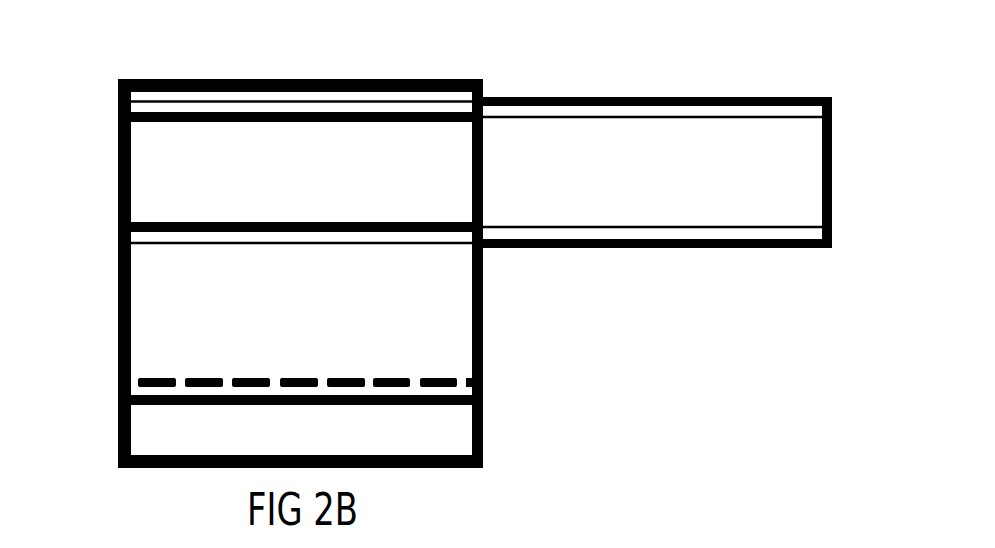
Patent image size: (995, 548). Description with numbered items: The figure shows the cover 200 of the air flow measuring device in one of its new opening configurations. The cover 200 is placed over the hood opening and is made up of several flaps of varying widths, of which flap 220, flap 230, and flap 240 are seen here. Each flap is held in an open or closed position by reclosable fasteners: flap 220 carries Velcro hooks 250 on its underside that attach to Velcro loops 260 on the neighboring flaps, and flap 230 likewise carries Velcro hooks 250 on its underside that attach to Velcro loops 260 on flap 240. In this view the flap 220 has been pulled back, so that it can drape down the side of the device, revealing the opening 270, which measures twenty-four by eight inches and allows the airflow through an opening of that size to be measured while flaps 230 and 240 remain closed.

The cover 200 is at (427, 55).
The flap 220 is at (815, 85).
The flap 230 is at (103, 330).
The flap 240 is at (103, 437).
The Velcro hooks 250 is at (665, 113).
The Velcro loops 260 is at (137, 107).
The opening 270 is at (141, 171).